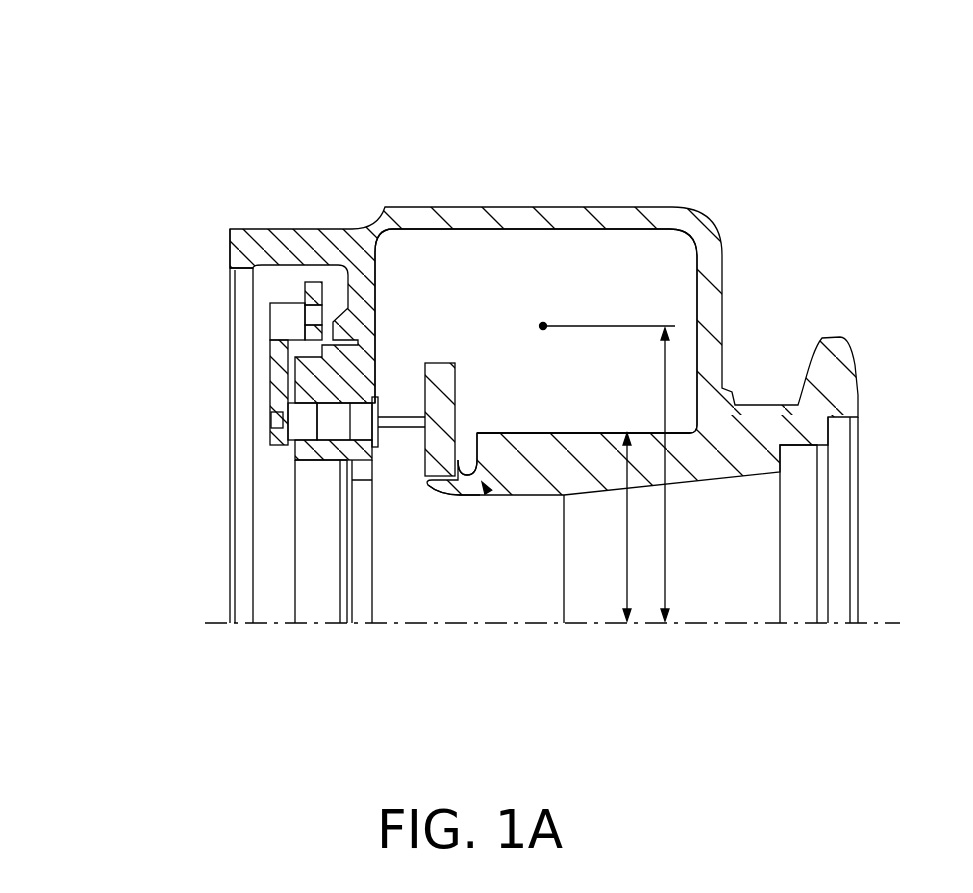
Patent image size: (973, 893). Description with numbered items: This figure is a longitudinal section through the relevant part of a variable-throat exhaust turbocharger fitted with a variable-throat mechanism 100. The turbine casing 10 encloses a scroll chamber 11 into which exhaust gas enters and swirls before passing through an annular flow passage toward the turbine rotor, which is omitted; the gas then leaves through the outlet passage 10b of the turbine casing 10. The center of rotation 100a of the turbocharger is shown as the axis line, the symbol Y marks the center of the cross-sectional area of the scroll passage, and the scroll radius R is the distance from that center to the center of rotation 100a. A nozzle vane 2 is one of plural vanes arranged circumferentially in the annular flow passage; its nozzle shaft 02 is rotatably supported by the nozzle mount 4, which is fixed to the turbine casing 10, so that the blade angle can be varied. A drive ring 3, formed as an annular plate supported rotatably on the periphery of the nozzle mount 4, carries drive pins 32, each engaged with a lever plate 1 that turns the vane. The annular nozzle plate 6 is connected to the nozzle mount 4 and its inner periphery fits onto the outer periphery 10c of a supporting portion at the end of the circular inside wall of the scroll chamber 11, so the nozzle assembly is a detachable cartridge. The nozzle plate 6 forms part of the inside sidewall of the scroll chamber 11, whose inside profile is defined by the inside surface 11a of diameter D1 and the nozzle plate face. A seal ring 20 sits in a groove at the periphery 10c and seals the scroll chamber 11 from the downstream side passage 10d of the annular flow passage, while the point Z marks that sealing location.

The variable-throat mechanism 100 is at (262, 366).
The center of rotation 100a is at (760, 622).
The turbine casing 10 is at (710, 240).
The outlet passage 10b is at (758, 530).
The outer periphery of supporting portion 10c is at (443, 497).
The downstream side passage 10d is at (387, 513).
The scroll chamber 11 is at (568, 248).
The inside surface 11a is at (599, 431).
The seal ring 20 is at (477, 433).
The lever plate 1 is at (270, 378).
The nozzle vane 2 is at (393, 428).
The drive ring 3 is at (313, 287).
The drive pin 32 is at (287, 313).
The nozzle mount 4 is at (312, 458).
The nozzle plate 6 is at (448, 363).
The nozzle shaft 02 is at (297, 440).
The center of cross sectional area of the scroll passage Y is at (543, 326).
The reference point Z is at (488, 491).
The diameter of inside surface D1 is at (606, 527).
The scroll radius R is at (678, 474).